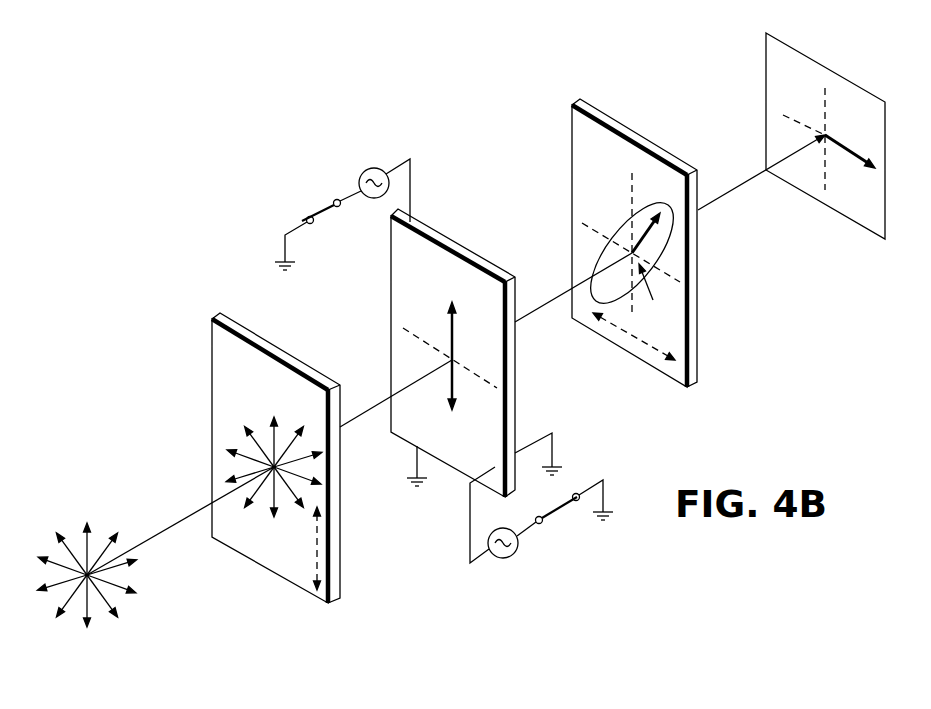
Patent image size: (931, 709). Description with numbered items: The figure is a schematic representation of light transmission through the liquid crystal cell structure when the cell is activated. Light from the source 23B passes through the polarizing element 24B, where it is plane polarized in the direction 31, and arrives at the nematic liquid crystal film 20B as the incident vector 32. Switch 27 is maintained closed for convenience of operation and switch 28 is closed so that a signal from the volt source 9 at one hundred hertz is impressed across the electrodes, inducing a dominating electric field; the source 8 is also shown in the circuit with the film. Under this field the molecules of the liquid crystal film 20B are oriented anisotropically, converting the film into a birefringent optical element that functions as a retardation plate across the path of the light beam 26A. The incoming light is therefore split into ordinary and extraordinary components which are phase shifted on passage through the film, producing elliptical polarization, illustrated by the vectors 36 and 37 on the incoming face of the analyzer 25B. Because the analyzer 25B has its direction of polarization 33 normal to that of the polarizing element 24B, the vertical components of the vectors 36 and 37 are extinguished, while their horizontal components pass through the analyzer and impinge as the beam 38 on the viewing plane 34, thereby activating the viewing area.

The voltage source 8 is at (505, 558).
The volt source 9 is at (374, 168).
The nematic liquid crystal film 20B is at (398, 272).
The source 23B is at (88, 607).
The polarizing element 24B is at (220, 366).
The analyzer 25B is at (578, 142).
The light beam 26A is at (182, 517).
The switch 27 is at (565, 505).
The switch 28 is at (315, 197).
The direction of polarization 31 is at (317, 541).
The incident vector 32 is at (452, 338).
The direction of polarization 33 is at (637, 340).
The viewing plane 34 is at (775, 70).
The vector 36 is at (659, 291).
The vector 37 is at (647, 235).
The beam 38 is at (850, 158).